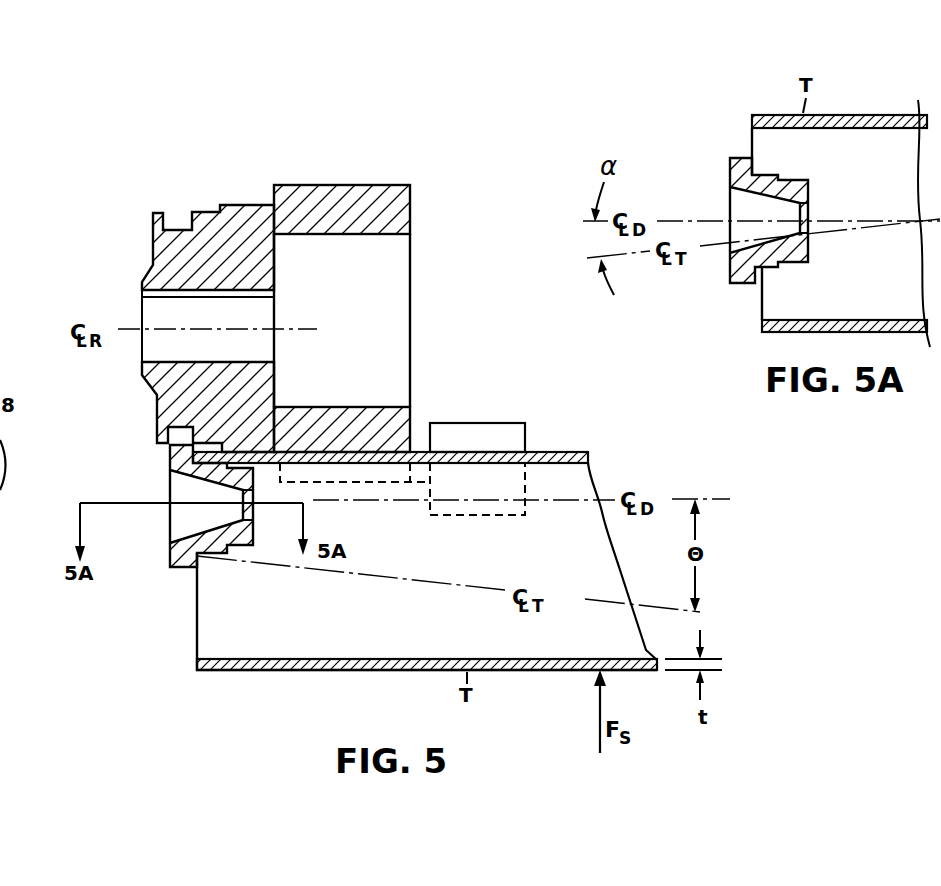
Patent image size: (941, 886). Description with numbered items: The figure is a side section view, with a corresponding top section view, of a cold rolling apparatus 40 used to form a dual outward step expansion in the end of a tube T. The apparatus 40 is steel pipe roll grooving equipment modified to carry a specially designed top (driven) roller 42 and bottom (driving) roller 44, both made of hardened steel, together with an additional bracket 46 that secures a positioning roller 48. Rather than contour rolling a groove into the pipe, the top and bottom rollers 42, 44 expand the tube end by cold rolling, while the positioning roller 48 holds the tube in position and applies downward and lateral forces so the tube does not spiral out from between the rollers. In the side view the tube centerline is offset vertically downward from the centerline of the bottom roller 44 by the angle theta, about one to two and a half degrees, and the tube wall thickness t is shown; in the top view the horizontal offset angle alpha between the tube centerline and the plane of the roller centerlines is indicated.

In FIG. 5, the apparatus 40 is at (295, 686).
In FIG. 5, the top roller 42 is at (153, 262).
In FIG. 5, the bottom roller 44 is at (177, 571).
In FIG. 5A, the bottom roller 44 is at (737, 286).
In FIG. 5, the bracket 46 is at (338, 199).
In FIG. 5, the positioning roller 48 is at (520, 438).